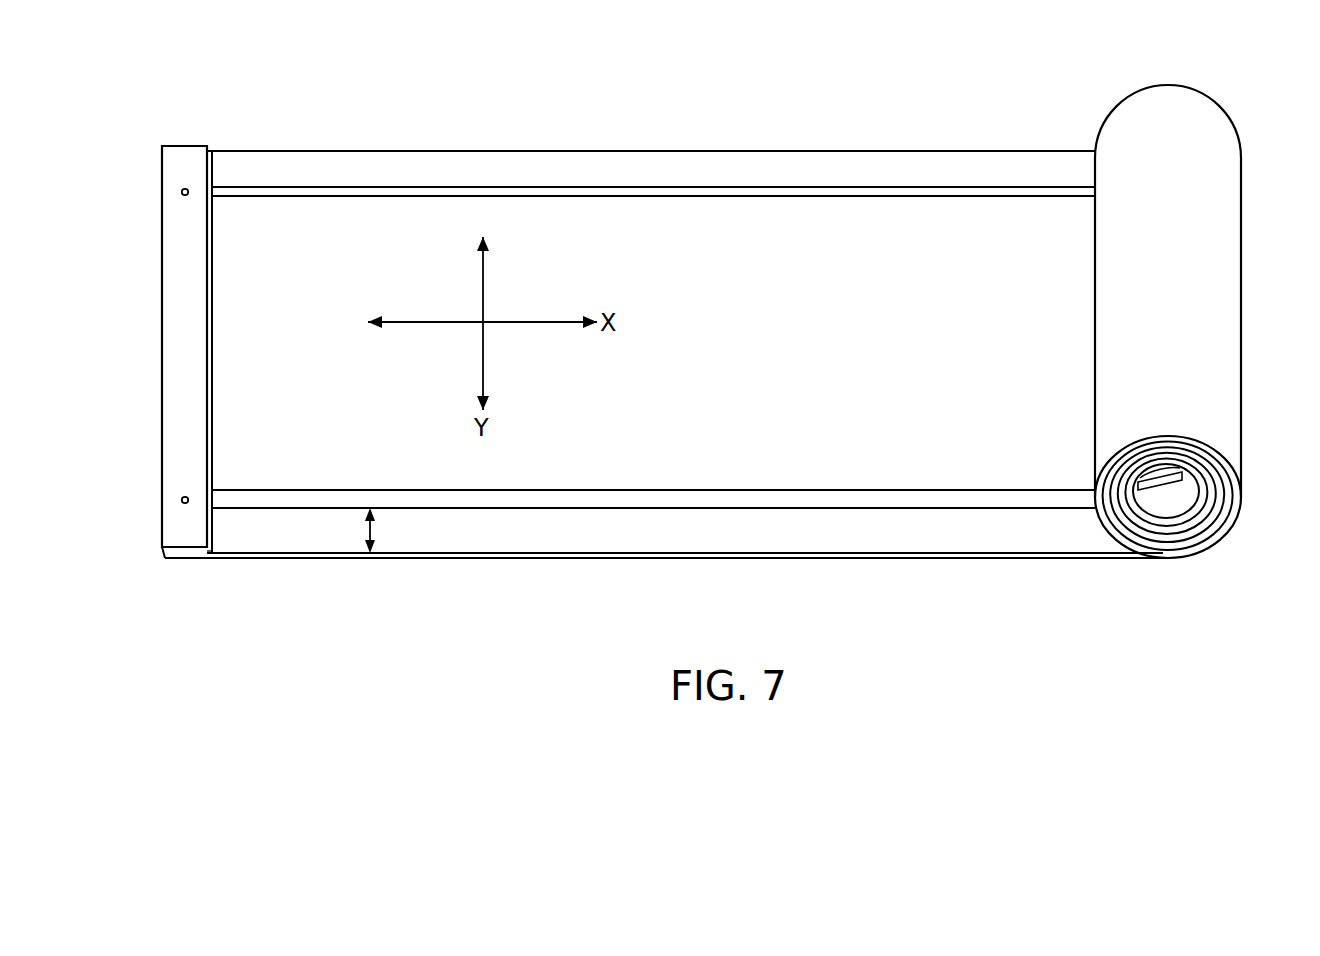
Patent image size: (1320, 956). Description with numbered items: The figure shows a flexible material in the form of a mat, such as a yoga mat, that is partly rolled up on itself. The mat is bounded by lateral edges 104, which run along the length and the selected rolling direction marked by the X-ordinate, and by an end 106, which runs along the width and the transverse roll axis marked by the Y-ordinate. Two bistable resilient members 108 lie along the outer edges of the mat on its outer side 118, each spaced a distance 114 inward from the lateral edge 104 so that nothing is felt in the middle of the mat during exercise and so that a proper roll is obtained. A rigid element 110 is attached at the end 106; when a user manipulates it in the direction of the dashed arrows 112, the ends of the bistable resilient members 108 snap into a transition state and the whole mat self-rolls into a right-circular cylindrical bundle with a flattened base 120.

The lateral edge 104 is at (605, 151).
The end 106 is at (152, 291).
The bistable resilient member 108 is at (907, 203).
The rigid element 110 is at (219, 266).
The dashed arrow 112 is at (1112, 301).
The distance 114 is at (375, 530).
The outer side 118 is at (850, 351).
The flattened base 120 is at (1167, 552).